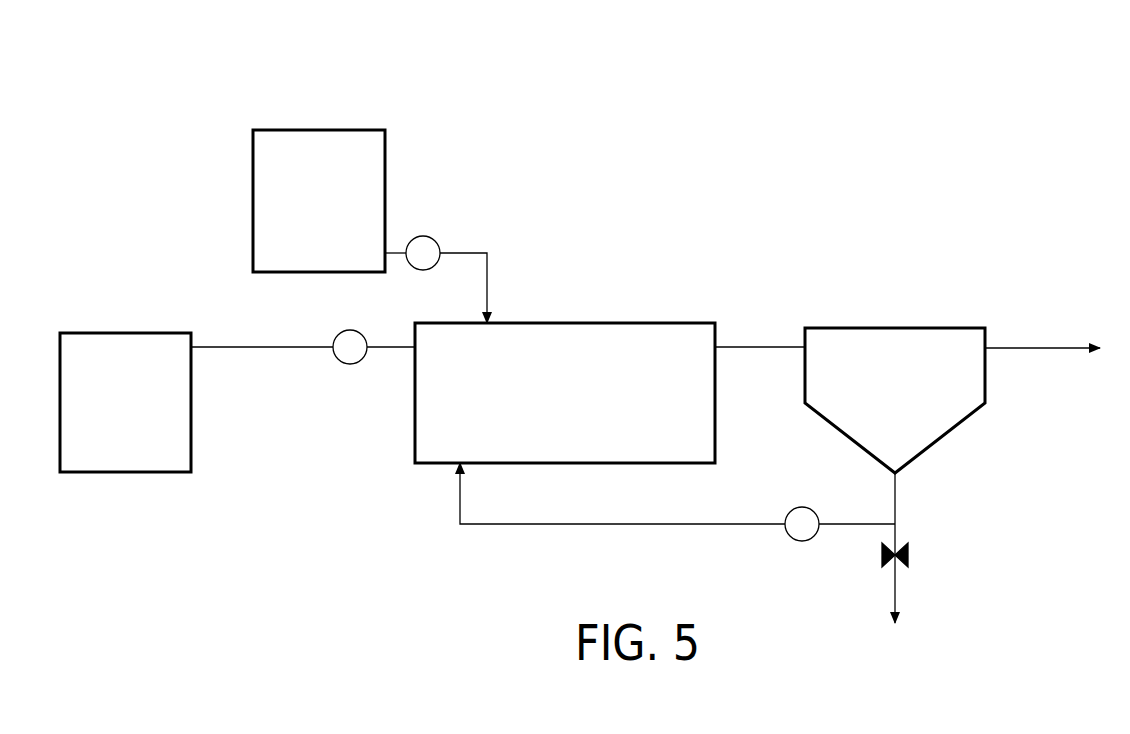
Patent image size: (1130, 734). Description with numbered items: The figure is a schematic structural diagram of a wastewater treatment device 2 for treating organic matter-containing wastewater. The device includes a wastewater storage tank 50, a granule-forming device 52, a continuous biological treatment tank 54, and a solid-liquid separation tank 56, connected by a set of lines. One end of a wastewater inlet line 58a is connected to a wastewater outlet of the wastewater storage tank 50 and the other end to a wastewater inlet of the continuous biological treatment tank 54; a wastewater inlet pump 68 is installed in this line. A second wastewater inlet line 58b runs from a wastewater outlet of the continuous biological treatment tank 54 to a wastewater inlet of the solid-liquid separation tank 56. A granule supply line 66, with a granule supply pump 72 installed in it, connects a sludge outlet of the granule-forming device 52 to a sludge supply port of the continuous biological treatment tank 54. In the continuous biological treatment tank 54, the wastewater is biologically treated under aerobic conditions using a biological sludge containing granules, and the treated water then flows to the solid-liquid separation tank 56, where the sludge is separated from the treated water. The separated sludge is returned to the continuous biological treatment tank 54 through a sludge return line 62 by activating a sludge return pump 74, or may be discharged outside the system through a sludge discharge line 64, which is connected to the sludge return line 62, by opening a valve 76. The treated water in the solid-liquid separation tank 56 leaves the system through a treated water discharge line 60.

The wastewater treatment device 2 is at (614, 70).
The wastewater storage tank 50 is at (90, 332).
The granule-forming device 52 is at (318, 130).
The continuous biological treatment tank 54 is at (627, 321).
The solid-liquid separation tank 56 is at (910, 326).
The wastewater inlet line 58a is at (255, 345).
The wastewater inlet line 58b is at (768, 343).
The treated water discharge line 60 is at (1065, 352).
The sludge return line 62 is at (738, 522).
The sludge discharge line 64 is at (895, 591).
The granule supply line 66 is at (487, 275).
The wastewater inlet pump 68 is at (345, 369).
The granule supply pump 72 is at (430, 275).
The sludge return pump 74 is at (801, 502).
The valve 76 is at (908, 555).